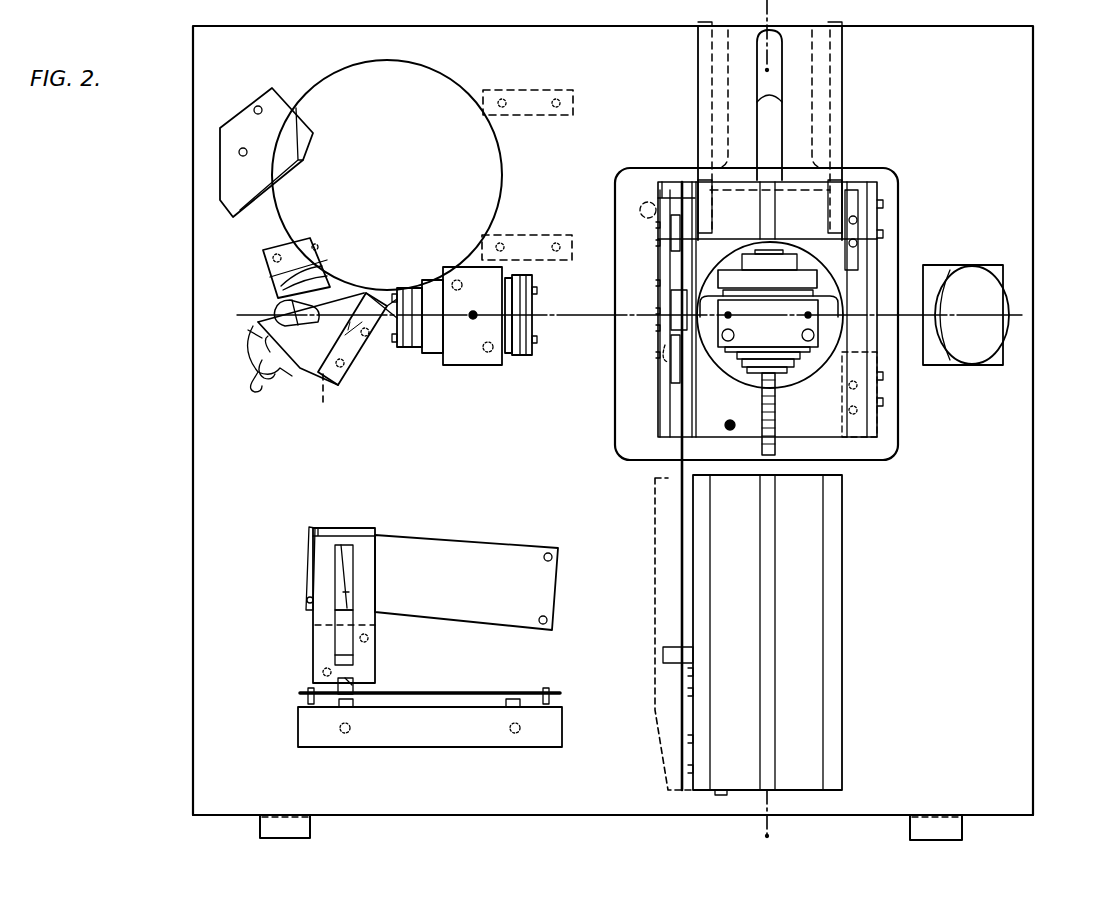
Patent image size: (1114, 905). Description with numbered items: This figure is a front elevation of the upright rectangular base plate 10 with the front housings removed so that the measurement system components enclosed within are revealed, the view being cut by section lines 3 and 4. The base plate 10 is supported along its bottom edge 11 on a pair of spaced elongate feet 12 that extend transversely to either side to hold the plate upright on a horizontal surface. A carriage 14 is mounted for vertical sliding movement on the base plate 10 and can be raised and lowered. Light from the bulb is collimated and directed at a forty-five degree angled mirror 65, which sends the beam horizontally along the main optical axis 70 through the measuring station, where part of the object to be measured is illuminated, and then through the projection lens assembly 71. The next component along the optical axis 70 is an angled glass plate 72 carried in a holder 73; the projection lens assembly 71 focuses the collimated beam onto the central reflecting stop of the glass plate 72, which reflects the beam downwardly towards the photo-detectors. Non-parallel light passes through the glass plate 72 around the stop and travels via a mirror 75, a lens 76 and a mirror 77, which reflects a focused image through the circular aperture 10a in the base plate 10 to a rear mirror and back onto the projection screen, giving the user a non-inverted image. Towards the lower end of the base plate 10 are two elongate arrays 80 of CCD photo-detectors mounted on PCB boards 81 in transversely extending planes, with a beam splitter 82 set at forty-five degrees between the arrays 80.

The section line 3- 3 is at (757, 425).
The section line 4- 4 is at (452, 218).
The base plate 10 is at (197, 560).
The circular aperture 10a is at (435, 72).
The bottom edge 11 is at (480, 815).
The feet 12 is at (262, 834).
The carriage 14 is at (805, 680).
The mirror 65 is at (963, 353).
The main optical axis 70 is at (548, 318).
The projection lens assembly 71 is at (465, 367).
The angled glass plate 72 is at (306, 361).
The holder 73 is at (353, 363).
The mirror 75 is at (287, 312).
The lens 76 is at (270, 278).
The mirror 77 is at (240, 222).
The arrays of photo-detectors 80 is at (346, 592).
The PCB boards 81 is at (540, 598).
The beam splitter 82 is at (338, 636).